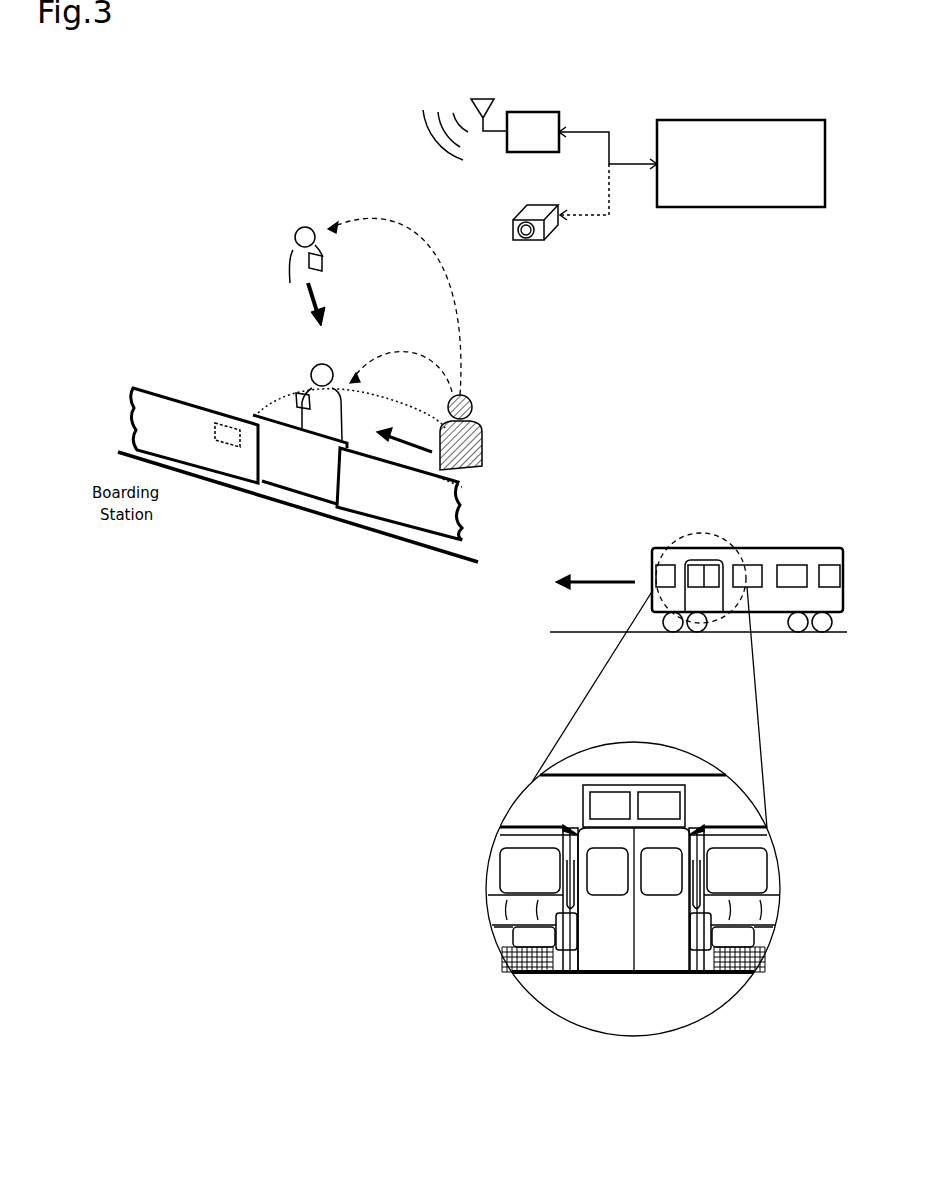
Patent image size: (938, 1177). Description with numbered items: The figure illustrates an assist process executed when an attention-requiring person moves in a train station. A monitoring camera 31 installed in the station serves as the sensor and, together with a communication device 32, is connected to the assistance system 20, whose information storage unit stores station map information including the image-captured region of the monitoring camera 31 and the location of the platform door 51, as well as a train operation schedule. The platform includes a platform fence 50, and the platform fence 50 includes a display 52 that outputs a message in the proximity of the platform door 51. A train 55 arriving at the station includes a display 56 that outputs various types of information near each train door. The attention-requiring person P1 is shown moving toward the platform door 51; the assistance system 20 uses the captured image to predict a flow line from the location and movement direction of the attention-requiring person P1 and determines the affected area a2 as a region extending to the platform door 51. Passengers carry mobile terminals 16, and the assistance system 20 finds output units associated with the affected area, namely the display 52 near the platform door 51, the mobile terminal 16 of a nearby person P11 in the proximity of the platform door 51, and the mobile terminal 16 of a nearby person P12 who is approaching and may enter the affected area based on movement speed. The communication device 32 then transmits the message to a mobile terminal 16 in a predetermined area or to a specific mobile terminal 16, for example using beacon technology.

The assistance system 20 is at (786, 120).
The monitoring camera 31 is at (546, 206).
The communication device 32 is at (539, 112).
The mobile terminal 16 is at (323, 259).
The platform fence 50 is at (165, 390).
The platform door 51 is at (306, 494).
The display 52 is at (226, 422).
The train 55 is at (804, 548).
The display 56 is at (657, 785).
The attention-requiring person P1 is at (483, 440).
The nearby person P11 is at (333, 367).
The nearby person P12 is at (313, 226).
The affected area a2 is at (272, 400).